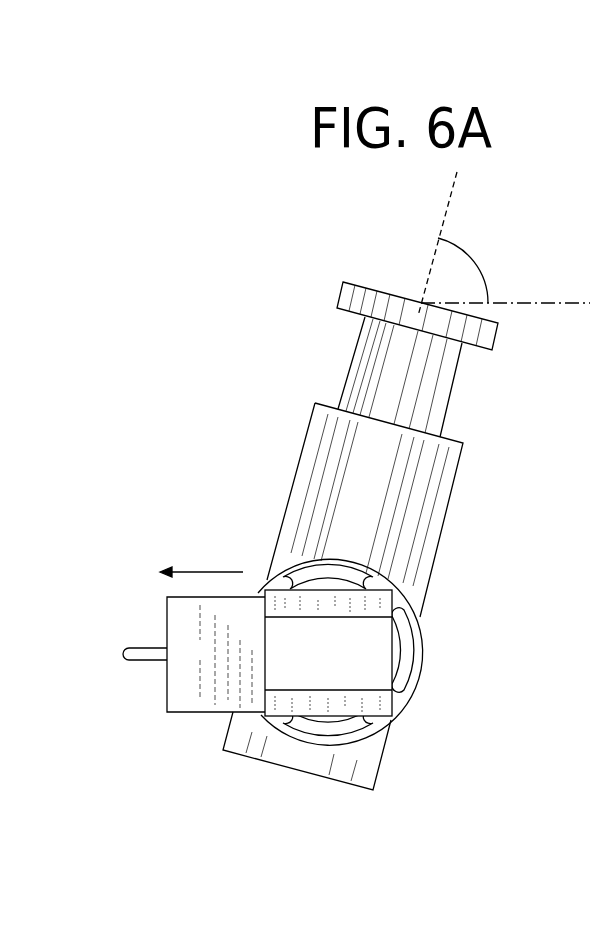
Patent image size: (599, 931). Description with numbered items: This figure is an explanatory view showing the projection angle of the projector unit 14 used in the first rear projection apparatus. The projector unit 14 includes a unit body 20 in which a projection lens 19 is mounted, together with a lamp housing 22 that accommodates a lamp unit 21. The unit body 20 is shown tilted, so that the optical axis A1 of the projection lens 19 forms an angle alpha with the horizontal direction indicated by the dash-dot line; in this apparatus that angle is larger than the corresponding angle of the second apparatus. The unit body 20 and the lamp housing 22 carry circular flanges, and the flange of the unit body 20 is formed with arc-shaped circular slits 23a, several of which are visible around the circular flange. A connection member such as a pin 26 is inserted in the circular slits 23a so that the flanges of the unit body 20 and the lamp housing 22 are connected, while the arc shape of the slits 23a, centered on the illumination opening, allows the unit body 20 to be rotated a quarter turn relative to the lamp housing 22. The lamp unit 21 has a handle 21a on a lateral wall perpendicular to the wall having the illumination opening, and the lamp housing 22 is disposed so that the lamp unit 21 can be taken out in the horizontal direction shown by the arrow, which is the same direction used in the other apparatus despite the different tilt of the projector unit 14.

The projector unit 14 is at (275, 430).
The projection lens 19 is at (435, 393).
The unit body 20 is at (432, 495).
The lamp unit 21 is at (210, 698).
The handle 21a is at (137, 661).
The lamp housing 22 is at (402, 713).
The circular slits 23a is at (318, 566).
The pin 26 is at (420, 672).
The optical axis A1 is at (447, 205).